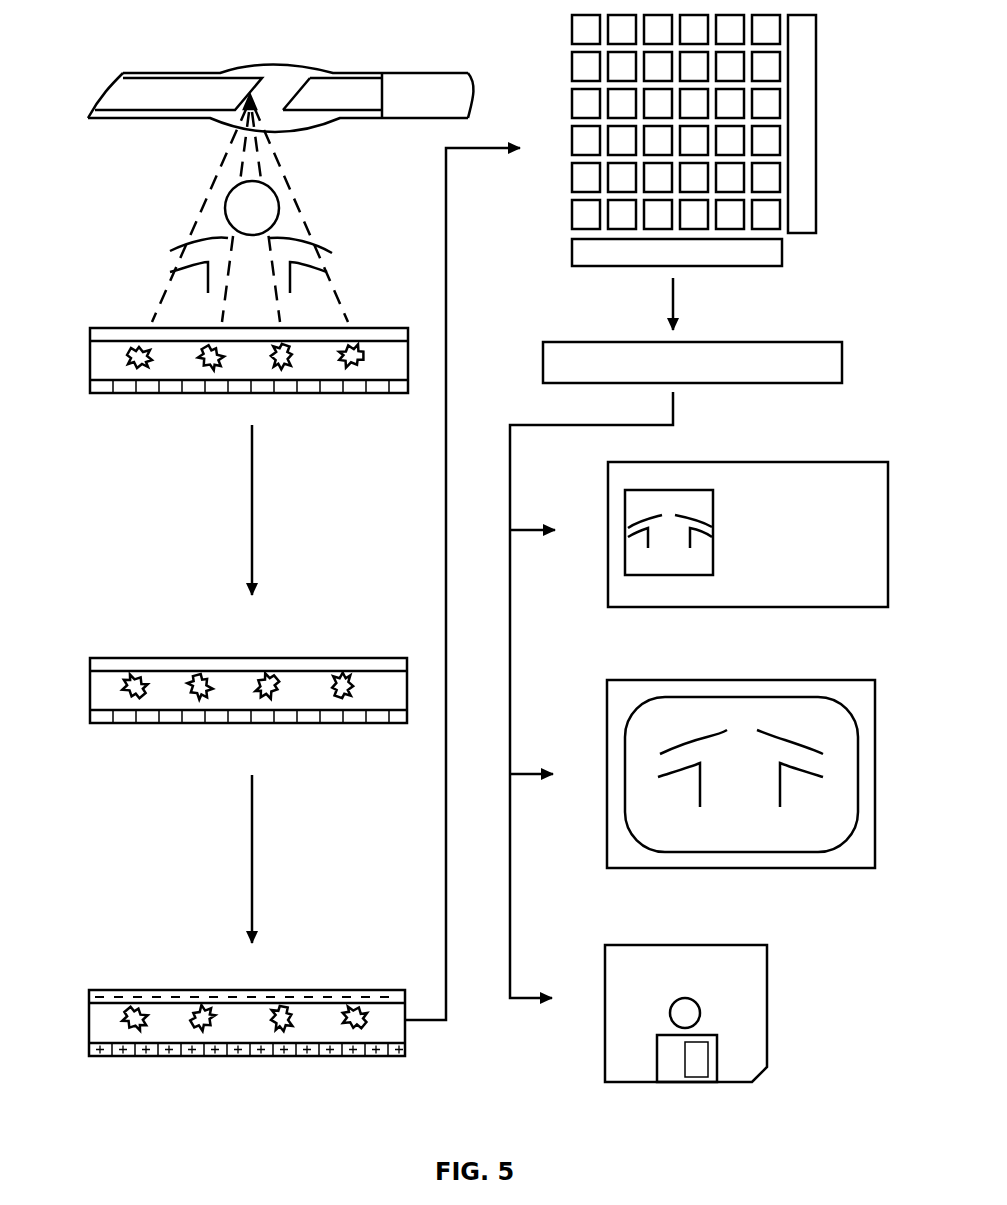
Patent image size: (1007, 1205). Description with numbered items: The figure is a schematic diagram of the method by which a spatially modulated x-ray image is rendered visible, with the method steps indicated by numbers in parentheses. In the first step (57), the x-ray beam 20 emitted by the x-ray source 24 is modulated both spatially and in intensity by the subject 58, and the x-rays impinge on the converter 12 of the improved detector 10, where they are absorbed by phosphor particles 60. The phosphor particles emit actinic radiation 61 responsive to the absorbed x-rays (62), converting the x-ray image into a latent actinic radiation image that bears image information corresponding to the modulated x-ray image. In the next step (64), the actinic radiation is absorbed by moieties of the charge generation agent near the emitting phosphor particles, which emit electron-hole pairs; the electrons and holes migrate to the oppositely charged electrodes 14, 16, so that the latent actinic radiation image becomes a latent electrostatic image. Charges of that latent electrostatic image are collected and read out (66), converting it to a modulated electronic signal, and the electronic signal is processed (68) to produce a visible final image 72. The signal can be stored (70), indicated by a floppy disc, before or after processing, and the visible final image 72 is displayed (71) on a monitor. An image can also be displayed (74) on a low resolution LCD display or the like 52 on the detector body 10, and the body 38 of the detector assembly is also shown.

The x-ray source 24 is at (338, 70).
The x-ray beam 20 is at (200, 212).
The modulation step 57 is at (165, 258).
The subject 58 is at (268, 202).
The x-ray detector 10 is at (358, 316).
The converter 12 is at (408, 365).
The phosphor particles 60 is at (347, 362).
The actinic radiation 61 is at (130, 693).
The electrode 16 is at (282, 658).
The electrode 14 is at (302, 723).
The actinic radiation emission step 62 is at (196, 640).
The charge generation step 64 is at (201, 975).
The read-out step 66 is at (832, 128).
The processing step 68 is at (795, 330).
The display step on detector body 74 is at (815, 446).
The low resolution LCD display 52 is at (622, 557).
The body 38 is at (683, 608).
The display step 71 is at (793, 668).
The visible final image 72 is at (702, 853).
The storage step 70 is at (781, 1003).